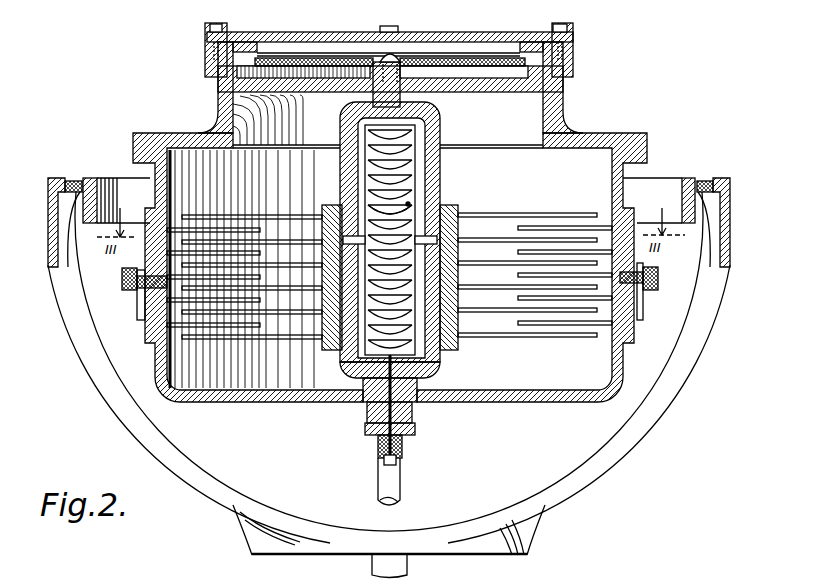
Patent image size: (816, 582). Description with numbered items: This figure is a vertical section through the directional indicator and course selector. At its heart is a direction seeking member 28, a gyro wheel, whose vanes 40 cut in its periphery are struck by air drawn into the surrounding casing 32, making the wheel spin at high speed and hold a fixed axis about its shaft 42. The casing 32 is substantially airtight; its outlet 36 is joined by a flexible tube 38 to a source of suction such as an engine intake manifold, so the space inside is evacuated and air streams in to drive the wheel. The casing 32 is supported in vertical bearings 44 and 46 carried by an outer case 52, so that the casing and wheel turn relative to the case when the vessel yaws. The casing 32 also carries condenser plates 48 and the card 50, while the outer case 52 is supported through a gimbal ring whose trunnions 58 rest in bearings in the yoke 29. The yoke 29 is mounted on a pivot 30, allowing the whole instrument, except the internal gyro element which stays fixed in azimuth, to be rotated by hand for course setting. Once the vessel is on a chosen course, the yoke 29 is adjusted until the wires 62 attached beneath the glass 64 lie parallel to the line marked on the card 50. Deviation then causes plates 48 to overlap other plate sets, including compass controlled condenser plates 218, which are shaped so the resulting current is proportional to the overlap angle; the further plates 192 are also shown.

The direction seeking member 28 is at (410, 178).
The yoke 29 is at (48, 229).
The pivot 30 is at (408, 567).
The casing 32 is at (440, 130).
The outlet 36 is at (426, 373).
The flexible tube 38 is at (398, 490).
The vanes 40 is at (408, 204).
The shaft 42 is at (450, 242).
The vertical bearing 44 is at (417, 94).
The vertical bearing 46 is at (418, 403).
The condenser plates 48 is at (285, 300).
The card 50 is at (350, 62).
The outer case 52 is at (536, 399).
The trunnions 58 is at (74, 179).
The wires 62 is at (392, 55).
The glass 64 is at (467, 37).
The electrode plates 192 is at (561, 278).
The compass controlled condenser plates 218 is at (282, 292).